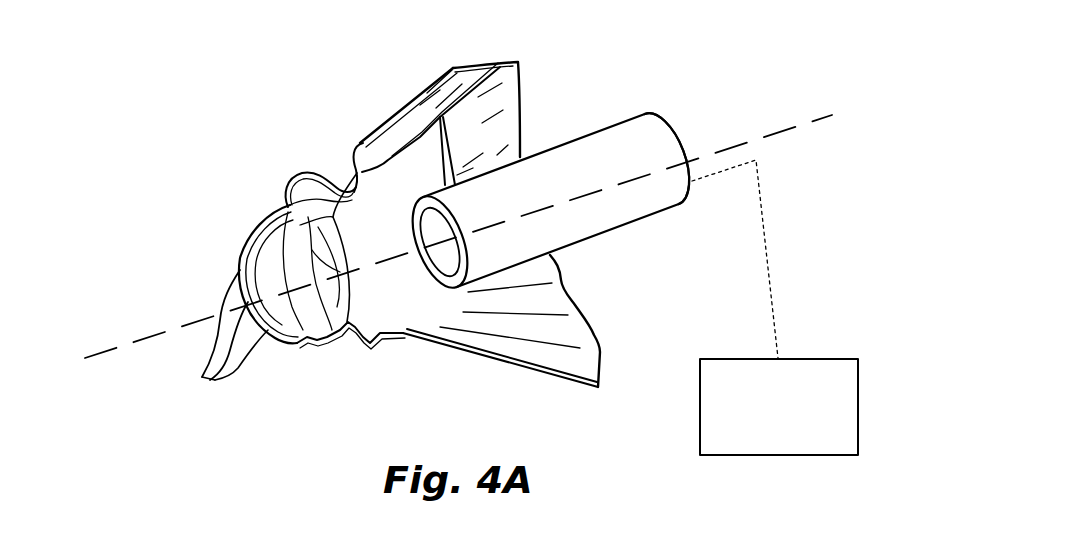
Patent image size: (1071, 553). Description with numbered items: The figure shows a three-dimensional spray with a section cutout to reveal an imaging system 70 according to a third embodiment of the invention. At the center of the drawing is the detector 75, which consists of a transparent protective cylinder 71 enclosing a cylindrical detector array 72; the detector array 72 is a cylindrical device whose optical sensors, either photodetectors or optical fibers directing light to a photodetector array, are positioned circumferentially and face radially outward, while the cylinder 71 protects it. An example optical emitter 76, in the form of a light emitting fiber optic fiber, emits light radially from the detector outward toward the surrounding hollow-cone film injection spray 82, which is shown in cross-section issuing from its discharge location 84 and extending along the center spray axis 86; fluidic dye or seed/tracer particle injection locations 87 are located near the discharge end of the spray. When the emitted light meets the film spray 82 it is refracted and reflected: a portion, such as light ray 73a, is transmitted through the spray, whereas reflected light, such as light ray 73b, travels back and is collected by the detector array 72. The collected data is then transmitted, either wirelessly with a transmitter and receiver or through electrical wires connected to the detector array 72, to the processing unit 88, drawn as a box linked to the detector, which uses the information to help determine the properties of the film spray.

The imaging system 70 is at (647, 80).
The protective cylinder 71 is at (603, 220).
The cylindrical detector array 72 is at (577, 139).
The light ray 73a is at (457, 180).
The light ray 73b is at (438, 168).
The detector 75 is at (648, 116).
The optical emitter 76 is at (460, 175).
The hollow-cone film injection spray 82 is at (290, 225).
The discharge location 84 is at (237, 252).
The center spray axis 86 is at (110, 350).
The fluidic dye or seed/tracer particle injection location 87 is at (204, 376).
The processing unit 88 is at (745, 456).